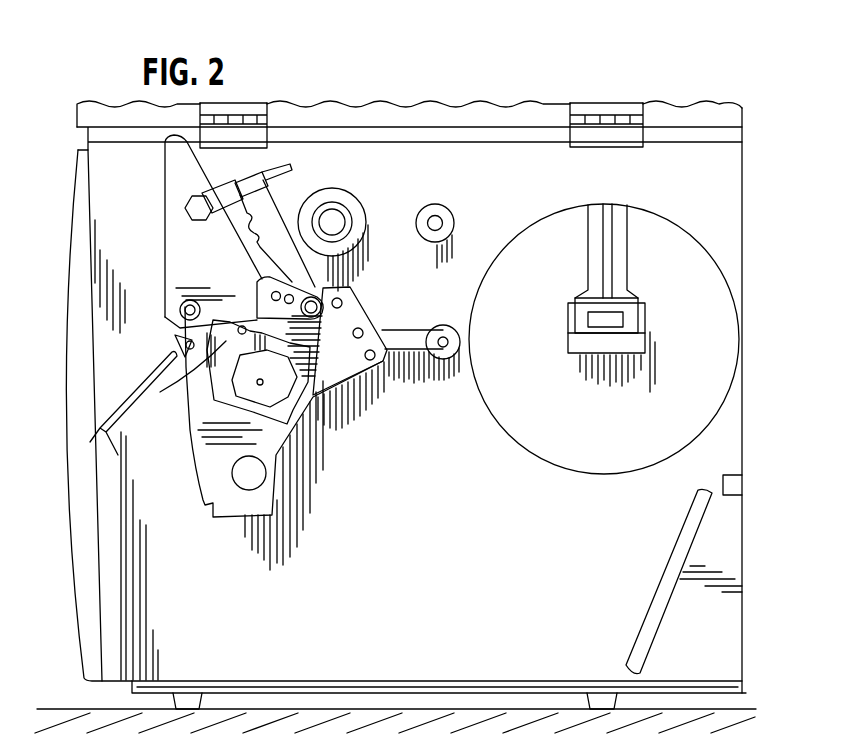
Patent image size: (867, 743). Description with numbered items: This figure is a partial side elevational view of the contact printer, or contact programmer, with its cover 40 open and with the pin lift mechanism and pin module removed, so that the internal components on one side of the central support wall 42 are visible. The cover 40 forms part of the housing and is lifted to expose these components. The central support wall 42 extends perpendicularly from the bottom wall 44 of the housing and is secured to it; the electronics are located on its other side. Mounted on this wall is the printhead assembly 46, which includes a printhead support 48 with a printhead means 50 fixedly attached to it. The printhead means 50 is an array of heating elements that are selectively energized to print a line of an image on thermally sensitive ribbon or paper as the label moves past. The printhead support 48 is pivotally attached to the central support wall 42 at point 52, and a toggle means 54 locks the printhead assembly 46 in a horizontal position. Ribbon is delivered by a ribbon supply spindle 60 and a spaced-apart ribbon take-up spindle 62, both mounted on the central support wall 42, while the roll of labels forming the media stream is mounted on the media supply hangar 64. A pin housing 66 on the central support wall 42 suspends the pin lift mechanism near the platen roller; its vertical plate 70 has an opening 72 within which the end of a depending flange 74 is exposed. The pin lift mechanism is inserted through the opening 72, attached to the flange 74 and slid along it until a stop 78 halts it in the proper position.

The cover 40 is at (516, 105).
The central support wall 42 is at (728, 170).
The bottom wall 44 is at (737, 682).
The printhead assembly 46 is at (286, 196).
The printhead support 48 is at (240, 255).
The printhead means 50 is at (186, 209).
The pivot point 52 is at (178, 302).
The toggle means 54 is at (247, 186).
The ribbon supply spindle 60 is at (436, 204).
The ribbon take-up spindle 62 is at (340, 193).
The media supply hangar 64 is at (622, 328).
The pin housing 66 is at (334, 414).
The vertical plate 70 is at (354, 362).
The opening 72 is at (212, 395).
The flange 74 is at (152, 372).
The stop 78 is at (232, 378).